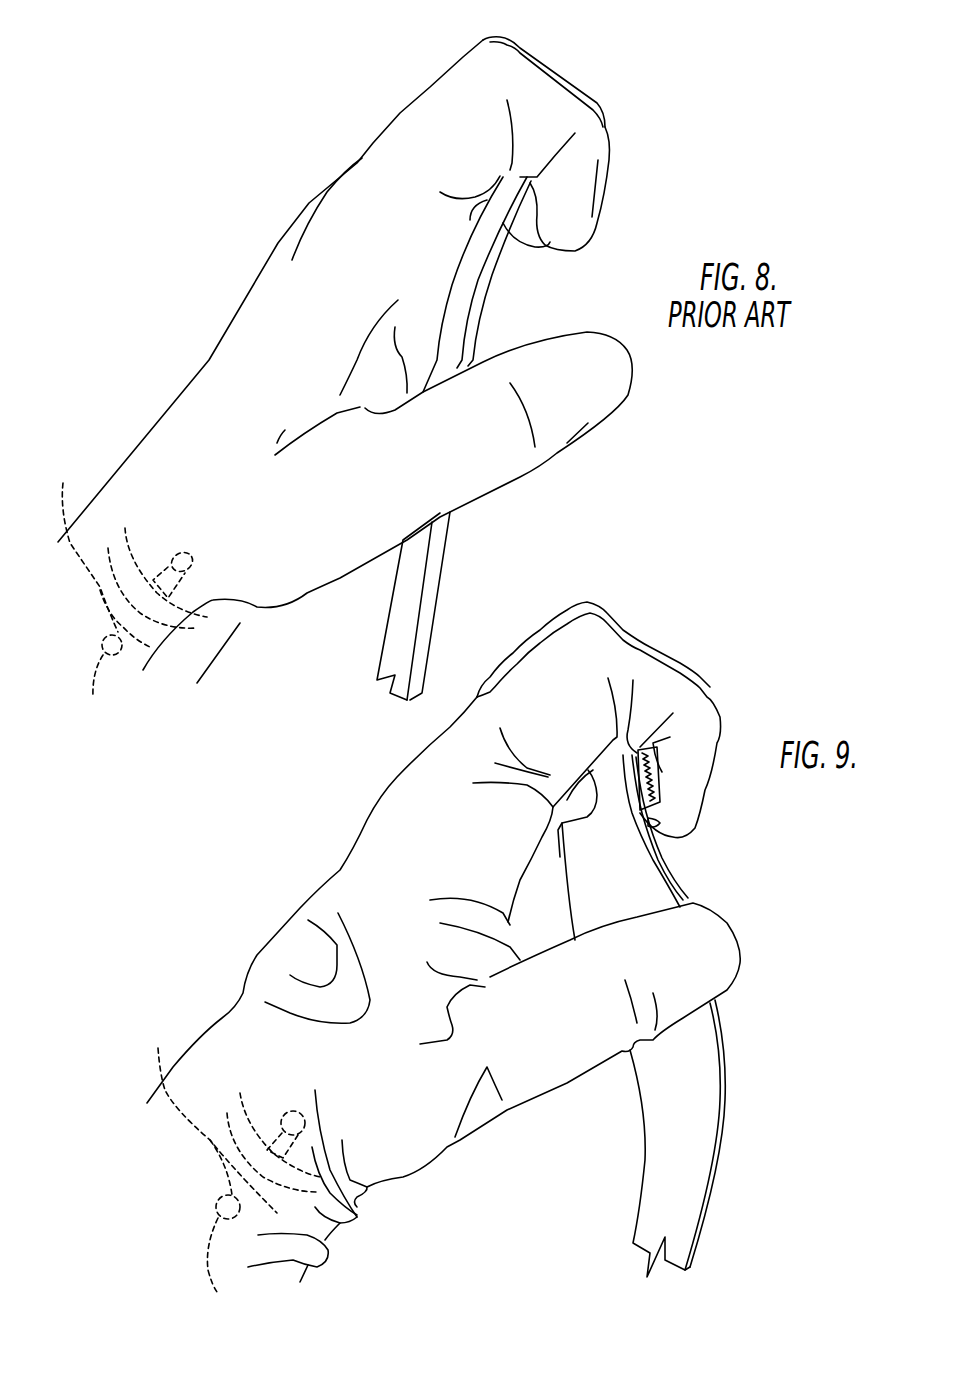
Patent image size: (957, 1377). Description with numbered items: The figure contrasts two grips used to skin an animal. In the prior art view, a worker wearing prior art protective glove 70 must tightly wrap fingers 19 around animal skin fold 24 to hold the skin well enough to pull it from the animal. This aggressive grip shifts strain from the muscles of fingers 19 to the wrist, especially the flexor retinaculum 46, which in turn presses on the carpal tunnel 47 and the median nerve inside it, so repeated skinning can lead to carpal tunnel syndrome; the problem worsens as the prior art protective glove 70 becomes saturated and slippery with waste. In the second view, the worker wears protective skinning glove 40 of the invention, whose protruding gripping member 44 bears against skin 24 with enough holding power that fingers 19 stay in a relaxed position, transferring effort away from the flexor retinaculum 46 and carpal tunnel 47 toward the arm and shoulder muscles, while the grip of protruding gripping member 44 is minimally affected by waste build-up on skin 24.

In FIG. 8, the fingers 19 is at (558, 83).
In FIG. 9, the fingers 19 is at (650, 662).
In FIG. 8, the animal skin fold 24 is at (480, 303).
In FIG. 9, the animal skin fold 24 is at (670, 873).
In FIG. 9, the protective skinning glove 40 is at (310, 920).
In FIG. 9, the protruding gripping member 44 is at (653, 777).
In FIG. 8, the flexor retinaculum 46 is at (126, 553).
In FIG. 9, the flexor retinaculum 46 is at (231, 1117).
In FIG. 8, the carpal tunnel 47 is at (144, 652).
In FIG. 9, the carpal tunnel 47 is at (254, 1220).
In FIG. 8, the prior art protective glove 70 is at (215, 345).